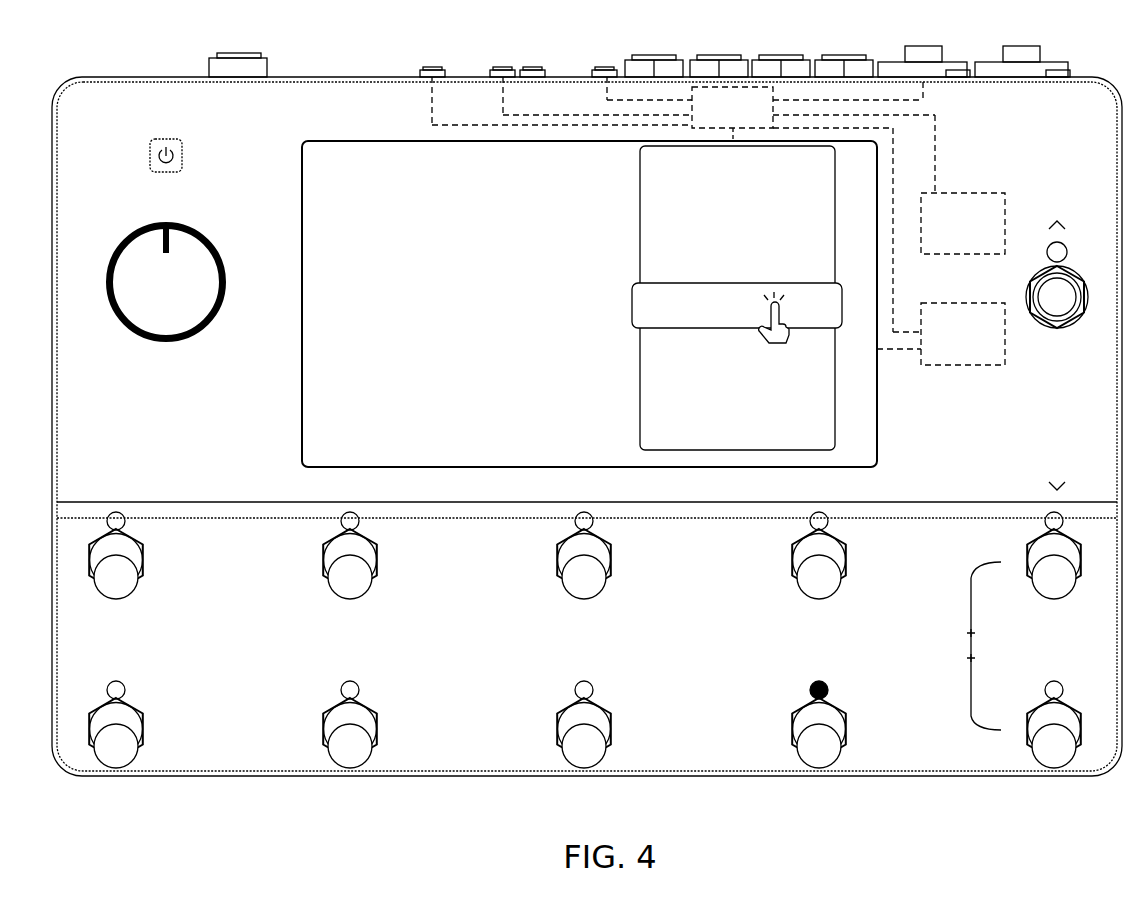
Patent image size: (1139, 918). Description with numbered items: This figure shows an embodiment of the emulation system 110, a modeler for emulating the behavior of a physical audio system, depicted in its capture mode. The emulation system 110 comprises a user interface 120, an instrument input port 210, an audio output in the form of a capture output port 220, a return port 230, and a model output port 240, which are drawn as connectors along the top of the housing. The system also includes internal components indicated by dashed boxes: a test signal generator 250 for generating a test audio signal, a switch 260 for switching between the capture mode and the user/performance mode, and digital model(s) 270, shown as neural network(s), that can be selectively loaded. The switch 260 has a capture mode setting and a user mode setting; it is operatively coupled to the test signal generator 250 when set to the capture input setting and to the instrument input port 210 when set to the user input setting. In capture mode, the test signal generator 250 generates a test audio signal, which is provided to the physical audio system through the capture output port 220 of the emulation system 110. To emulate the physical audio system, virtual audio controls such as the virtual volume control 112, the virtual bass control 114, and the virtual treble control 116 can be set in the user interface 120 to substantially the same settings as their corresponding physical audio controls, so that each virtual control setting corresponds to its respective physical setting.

The emulation system 110 is at (262, 777).
The virtual volume control 112 is at (203, 233).
The virtual bass control 114 is at (127, 598).
The virtual treble control 116 is at (361, 598).
The user interface 120 is at (302, 398).
The instrument input port 210 is at (925, 46).
The capture output port 220 is at (607, 70).
The return port 230 is at (432, 70).
The model output port 240 is at (503, 70).
The test signal generator 250 is at (951, 232).
The switch 260 is at (721, 115).
The digital model 270 is at (951, 342).